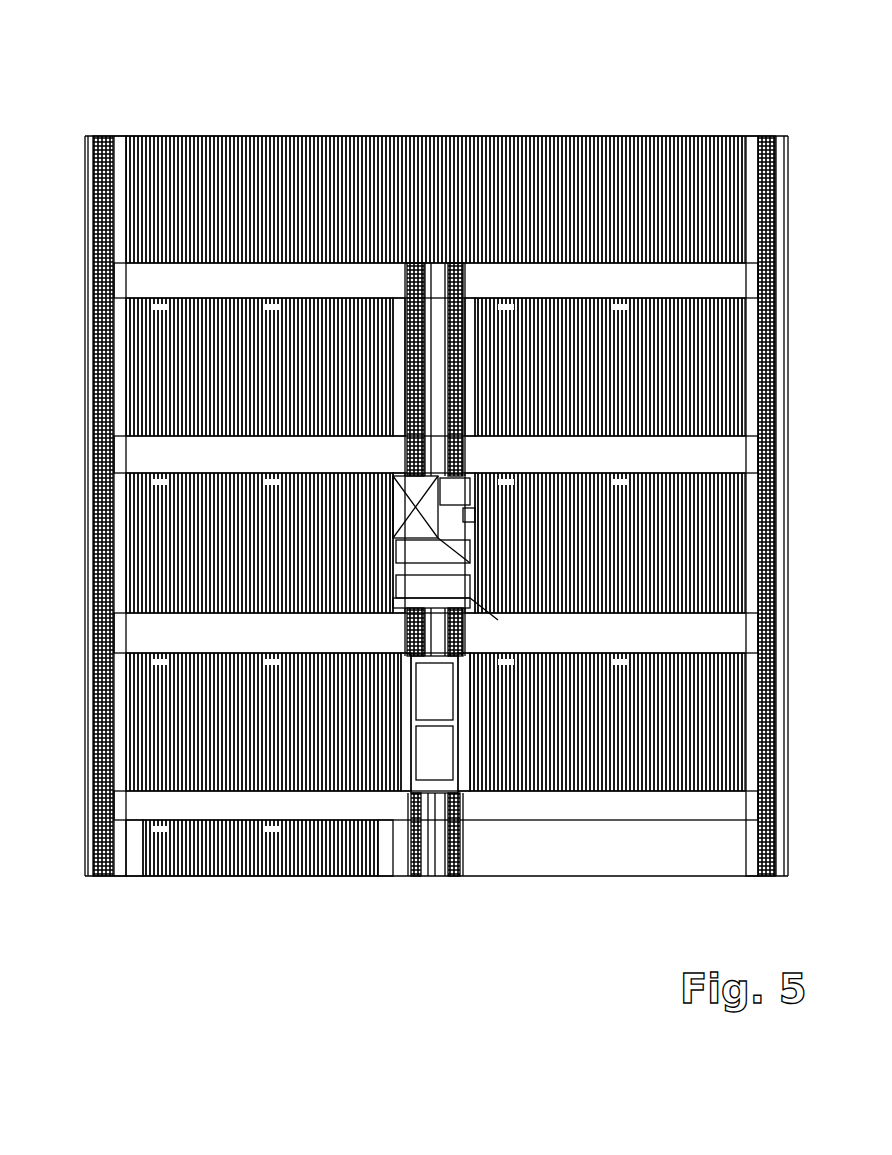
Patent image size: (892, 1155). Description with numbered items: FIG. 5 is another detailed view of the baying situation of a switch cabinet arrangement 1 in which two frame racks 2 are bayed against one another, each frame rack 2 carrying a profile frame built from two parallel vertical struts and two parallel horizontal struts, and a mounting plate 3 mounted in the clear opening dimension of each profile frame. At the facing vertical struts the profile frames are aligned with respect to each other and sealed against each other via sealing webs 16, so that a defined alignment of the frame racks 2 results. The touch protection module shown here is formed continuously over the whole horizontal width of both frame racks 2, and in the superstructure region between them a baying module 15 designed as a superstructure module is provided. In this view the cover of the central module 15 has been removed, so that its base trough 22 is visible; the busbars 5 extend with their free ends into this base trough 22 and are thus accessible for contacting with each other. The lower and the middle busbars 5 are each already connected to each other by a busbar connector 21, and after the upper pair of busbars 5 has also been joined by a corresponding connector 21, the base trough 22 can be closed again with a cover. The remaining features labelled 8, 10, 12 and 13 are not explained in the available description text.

The photovoltaic facade system 1 is at (690, 70).
The frame rack 2 is at (82, 128).
The mounting plate 3 is at (78, 264).
The busbar 5 is at (455, 508).
The photovoltaic module 8 is at (203, 128).
The mounting rail 10 is at (122, 122).
The connecting element 12 is at (392, 468).
The central channel 13 is at (458, 284).
The baying module 15 is at (435, 634).
The sealing web 16 is at (418, 870).
The busbar connector 21 is at (431, 573).
The base trough 22 is at (490, 612).